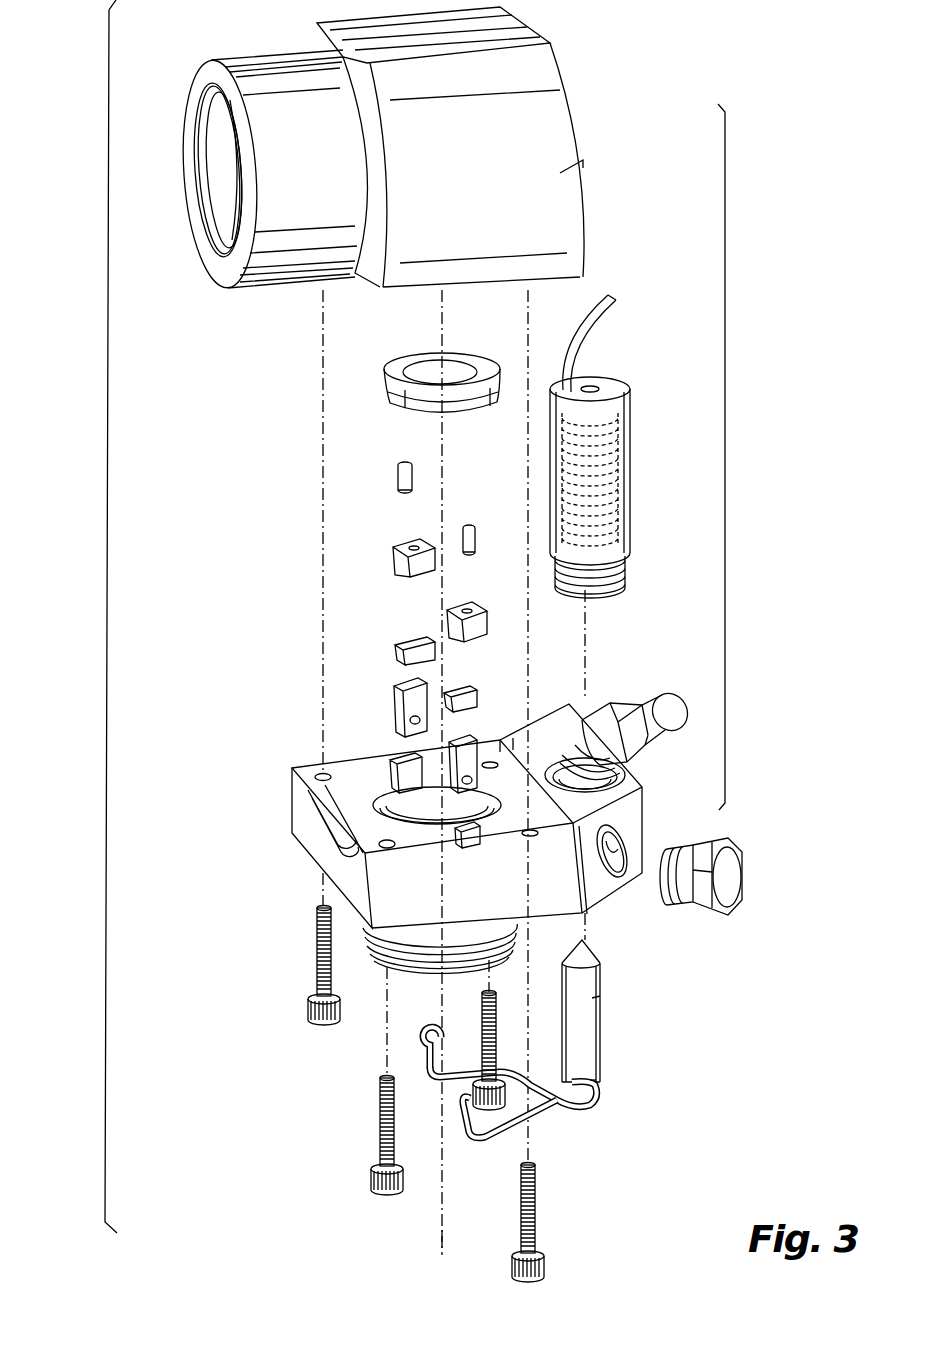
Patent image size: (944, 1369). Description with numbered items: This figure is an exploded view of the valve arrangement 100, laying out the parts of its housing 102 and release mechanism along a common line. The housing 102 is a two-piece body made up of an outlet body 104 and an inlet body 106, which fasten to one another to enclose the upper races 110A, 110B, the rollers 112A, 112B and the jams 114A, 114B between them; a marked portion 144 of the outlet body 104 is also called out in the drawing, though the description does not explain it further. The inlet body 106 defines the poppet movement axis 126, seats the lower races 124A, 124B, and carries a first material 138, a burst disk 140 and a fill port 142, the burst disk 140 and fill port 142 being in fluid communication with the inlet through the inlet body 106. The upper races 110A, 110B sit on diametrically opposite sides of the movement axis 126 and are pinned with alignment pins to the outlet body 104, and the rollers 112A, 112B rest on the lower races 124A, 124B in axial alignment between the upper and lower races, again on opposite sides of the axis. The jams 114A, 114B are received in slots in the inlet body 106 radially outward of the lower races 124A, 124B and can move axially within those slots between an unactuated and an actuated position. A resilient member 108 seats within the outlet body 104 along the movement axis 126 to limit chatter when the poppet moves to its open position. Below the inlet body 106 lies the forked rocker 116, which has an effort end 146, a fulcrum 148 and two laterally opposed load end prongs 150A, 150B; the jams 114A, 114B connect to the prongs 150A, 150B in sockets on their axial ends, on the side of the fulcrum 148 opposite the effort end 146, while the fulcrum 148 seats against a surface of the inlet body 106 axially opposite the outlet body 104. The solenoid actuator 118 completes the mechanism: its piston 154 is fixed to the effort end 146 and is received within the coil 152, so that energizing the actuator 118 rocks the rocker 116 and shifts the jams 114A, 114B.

The valve arrangement 100 is at (77, 497).
The housing 102 is at (742, 472).
The outlet body 104 is at (250, 14).
The inlet body 106 is at (450, 838).
The resilient member 108 is at (408, 355).
The upper race 110A is at (395, 550).
The upper race 110B is at (447, 622).
The roller 112A is at (395, 652).
The roller 112B is at (456, 690).
The jam 114A is at (395, 708).
The jam 114B is at (480, 762).
The forked rocker 116 is at (490, 1133).
The actuator 118 is at (633, 446).
The lower race 124A is at (398, 762).
The lower race 124B is at (432, 808).
The poppet movement axis 126 is at (440, 1246).
The first material 138 is at (602, 878).
The burst disk 140 is at (730, 880).
The fill port 142 is at (605, 700).
The coupling body 144 is at (503, 167).
The effort end 146 is at (592, 1116).
The fulcrum 148 is at (547, 1105).
The load end prong 150A is at (418, 1040).
The load end prong 150B is at (460, 1105).
The coil 152 is at (620, 500).
The piston 154 is at (598, 1000).